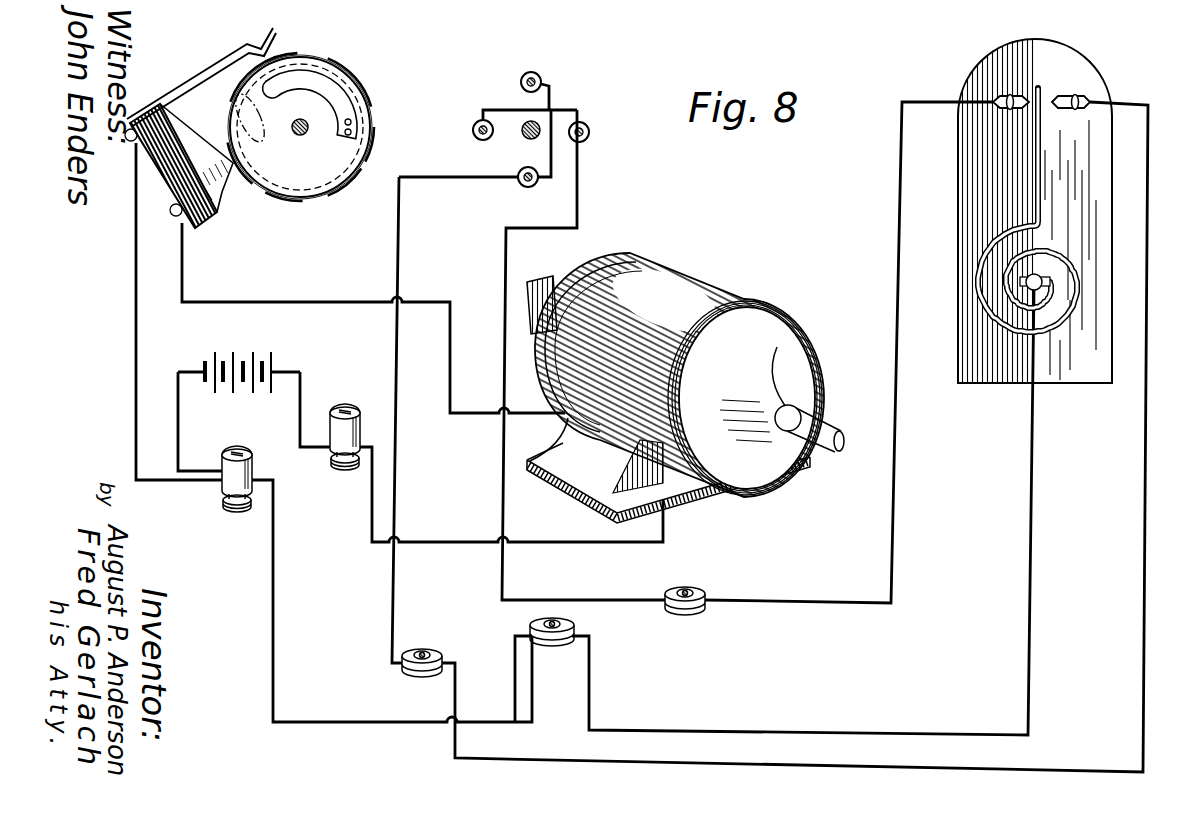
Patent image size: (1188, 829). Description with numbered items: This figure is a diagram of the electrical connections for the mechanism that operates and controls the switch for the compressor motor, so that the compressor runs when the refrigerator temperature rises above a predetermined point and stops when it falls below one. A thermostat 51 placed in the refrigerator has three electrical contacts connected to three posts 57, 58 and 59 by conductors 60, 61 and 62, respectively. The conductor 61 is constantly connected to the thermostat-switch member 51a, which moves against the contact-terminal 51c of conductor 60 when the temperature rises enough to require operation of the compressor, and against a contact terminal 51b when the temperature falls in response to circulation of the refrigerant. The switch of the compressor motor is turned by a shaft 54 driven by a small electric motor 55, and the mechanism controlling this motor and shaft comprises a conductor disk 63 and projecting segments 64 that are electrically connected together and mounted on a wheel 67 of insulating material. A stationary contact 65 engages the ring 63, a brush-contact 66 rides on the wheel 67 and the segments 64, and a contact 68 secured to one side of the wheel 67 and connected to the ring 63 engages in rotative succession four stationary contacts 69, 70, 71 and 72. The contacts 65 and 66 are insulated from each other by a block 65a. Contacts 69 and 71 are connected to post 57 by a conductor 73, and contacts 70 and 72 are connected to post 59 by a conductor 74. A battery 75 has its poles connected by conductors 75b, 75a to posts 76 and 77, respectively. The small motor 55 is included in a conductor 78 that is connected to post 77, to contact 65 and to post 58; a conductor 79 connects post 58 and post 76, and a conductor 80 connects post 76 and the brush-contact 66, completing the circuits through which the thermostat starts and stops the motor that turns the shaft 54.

The thermostat 51 is at (1035, 211).
The thermostat-switch member 51a is at (1044, 162).
The contact terminal 51b is at (1085, 96).
The contact-terminal 51c is at (1000, 98).
The shaft 54 is at (524, 135).
The small electric motor 55 is at (685, 388).
The post 57 is at (432, 655).
The post 58 is at (550, 642).
The post 59 is at (700, 592).
The conductor 60 is at (1146, 503).
The conductor 61 is at (1031, 500).
The conductor 62 is at (893, 503).
The conductor disk 63 is at (290, 197).
The projecting segments 64 is at (370, 152).
The stationary contact 65 is at (223, 190).
The block 65a is at (175, 147).
The brush-contact 66 is at (210, 80).
The wheel 67 is at (303, 140).
The contact 68 is at (338, 100).
The stationary contact 69 is at (540, 74).
The stationary contact 70 is at (587, 131).
The stationary contact 71 is at (524, 187).
The stationary contact 72 is at (474, 137).
The conductor 73 is at (398, 442).
The conductor 74 is at (507, 108).
The battery 75 is at (236, 360).
The conductor 75a is at (305, 395).
The conductor 75b is at (179, 415).
The post 76 is at (253, 470).
The post 77 is at (359, 426).
The conductor 78 is at (312, 302).
The conductor 79 is at (275, 590).
The conductor 80 is at (136, 339).